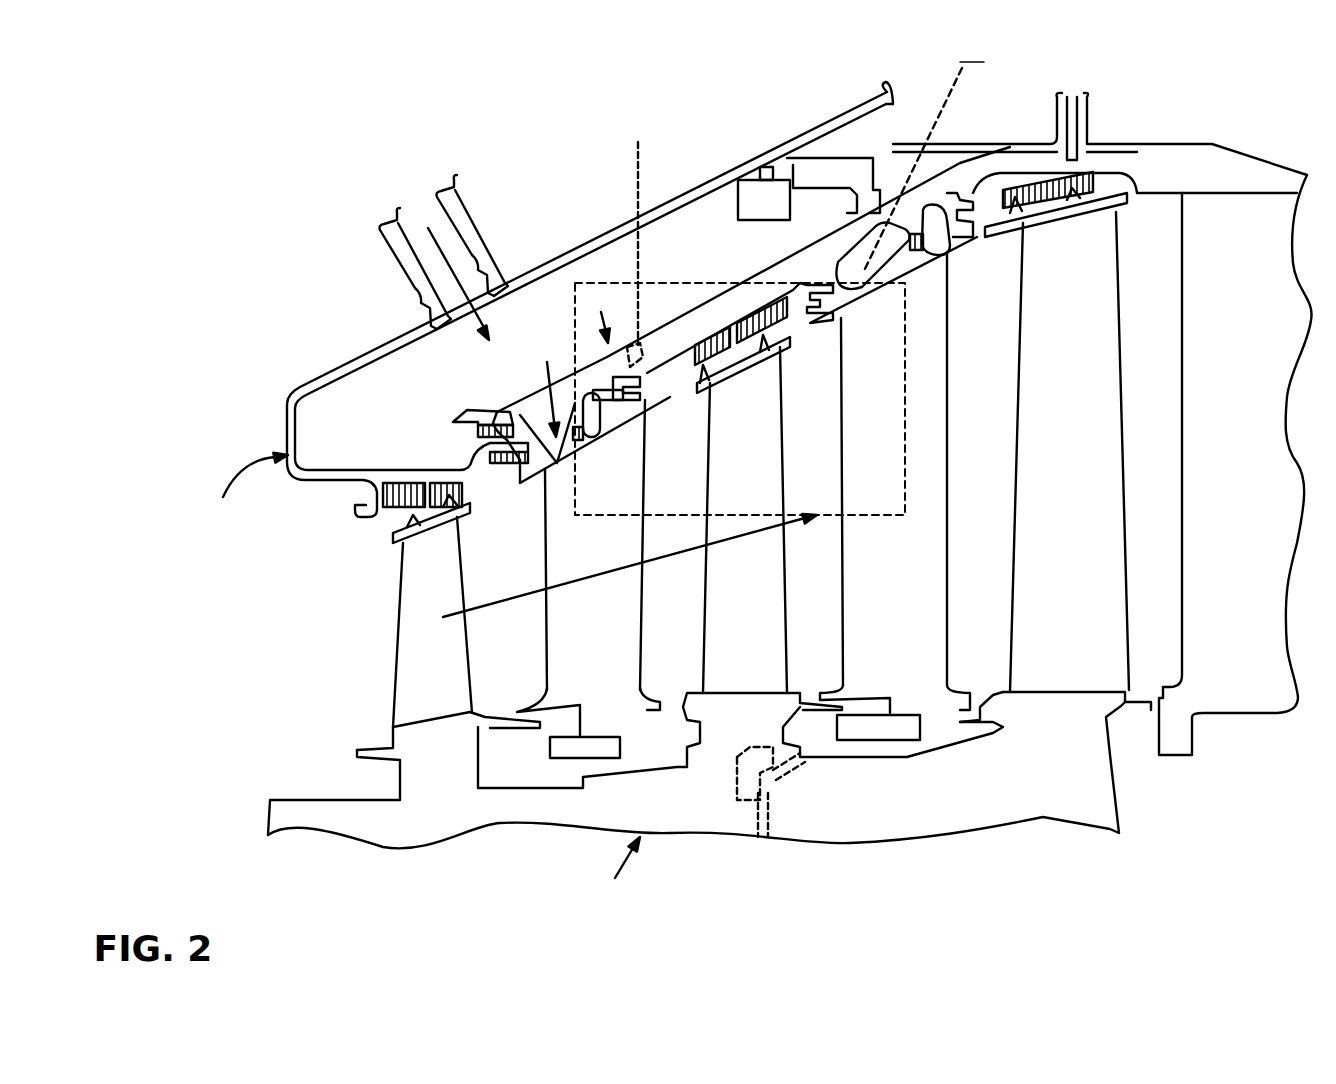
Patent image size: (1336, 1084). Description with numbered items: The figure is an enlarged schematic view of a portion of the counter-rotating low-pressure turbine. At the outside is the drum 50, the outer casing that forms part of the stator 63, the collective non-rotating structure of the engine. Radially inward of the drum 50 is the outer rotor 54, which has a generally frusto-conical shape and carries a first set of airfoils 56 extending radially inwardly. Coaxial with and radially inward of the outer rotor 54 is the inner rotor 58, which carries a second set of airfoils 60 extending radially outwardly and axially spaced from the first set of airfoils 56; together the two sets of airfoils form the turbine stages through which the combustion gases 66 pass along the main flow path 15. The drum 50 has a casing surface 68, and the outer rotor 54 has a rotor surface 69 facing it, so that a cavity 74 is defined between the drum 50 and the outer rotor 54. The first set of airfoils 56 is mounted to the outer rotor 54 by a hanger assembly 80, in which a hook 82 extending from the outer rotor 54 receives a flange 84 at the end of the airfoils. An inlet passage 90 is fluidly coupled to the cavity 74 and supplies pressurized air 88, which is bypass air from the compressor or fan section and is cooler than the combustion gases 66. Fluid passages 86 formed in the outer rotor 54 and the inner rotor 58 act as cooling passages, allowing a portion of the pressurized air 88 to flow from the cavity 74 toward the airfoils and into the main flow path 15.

The main flow path 15 is at (806, 568).
The drum 50 is at (609, 235).
The outer rotor 54 is at (751, 315).
The first set of airfoils 56 is at (637, 625).
The inner rotor 58 is at (709, 808).
The second set of airfoils 60 is at (468, 655).
The stator 63 is at (242, 485).
The combustion gases 66 is at (560, 587).
The casing surface 68 is at (660, 222).
The rotor surface 69 is at (663, 327).
The cavity 74 is at (704, 259).
The hanger assembly 80 is at (491, 422).
The hook 82 is at (643, 390).
The flange 84 is at (610, 392).
The fluid passage 86 is at (882, 924).
The pressurized air 88 is at (487, 319).
The inlet passage 90 is at (460, 233).